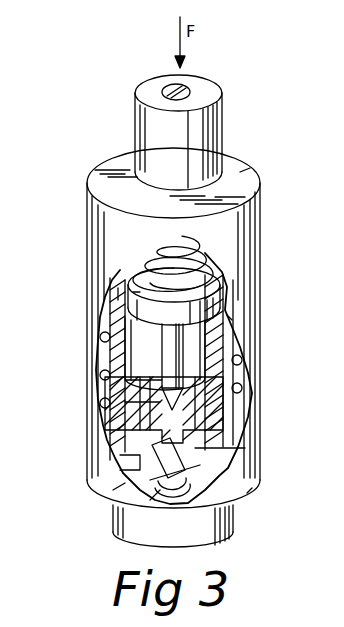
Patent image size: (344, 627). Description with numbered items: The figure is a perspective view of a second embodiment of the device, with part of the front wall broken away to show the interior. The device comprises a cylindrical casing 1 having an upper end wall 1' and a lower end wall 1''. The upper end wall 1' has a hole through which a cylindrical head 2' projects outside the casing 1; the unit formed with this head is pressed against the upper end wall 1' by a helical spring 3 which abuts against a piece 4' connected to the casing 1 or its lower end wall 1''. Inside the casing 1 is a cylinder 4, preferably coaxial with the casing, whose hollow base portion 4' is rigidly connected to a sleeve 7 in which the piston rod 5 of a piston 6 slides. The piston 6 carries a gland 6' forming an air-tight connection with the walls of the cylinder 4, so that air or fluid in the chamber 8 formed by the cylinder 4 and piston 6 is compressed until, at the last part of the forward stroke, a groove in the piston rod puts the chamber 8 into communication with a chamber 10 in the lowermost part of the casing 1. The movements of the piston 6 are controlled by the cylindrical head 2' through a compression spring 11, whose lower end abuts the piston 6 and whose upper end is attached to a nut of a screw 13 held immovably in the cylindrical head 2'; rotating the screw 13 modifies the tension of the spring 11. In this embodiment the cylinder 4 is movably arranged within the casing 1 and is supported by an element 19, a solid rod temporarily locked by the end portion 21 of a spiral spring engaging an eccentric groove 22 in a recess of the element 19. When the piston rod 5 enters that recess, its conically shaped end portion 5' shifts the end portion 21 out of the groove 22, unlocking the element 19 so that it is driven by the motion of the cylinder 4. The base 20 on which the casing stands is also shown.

The cylindrical casing 1 is at (156, 328).
The upper end wall 1' is at (261, 162).
The lower end wall 1'' is at (271, 498).
The cylindrical head 2' is at (197, 132).
The helical spring 3 is at (250, 373).
The cylinder 4 is at (255, 305).
The base portion 4' is at (202, 415).
The piston rod 5 is at (222, 364).
The conically shaped end portion 5' is at (106, 398).
The piston 6 is at (211, 286).
The gland 6' is at (96, 297).
The sleeve 7 is at (257, 397).
The chamber 8 is at (147, 343).
The chamber 10 is at (125, 448).
The compression spring 11 is at (207, 258).
The screw 13 is at (190, 90).
The element 19 is at (188, 505).
The base 20 is at (137, 522).
The end portion of spiral spring 21 is at (153, 498).
The groove 22 is at (113, 492).